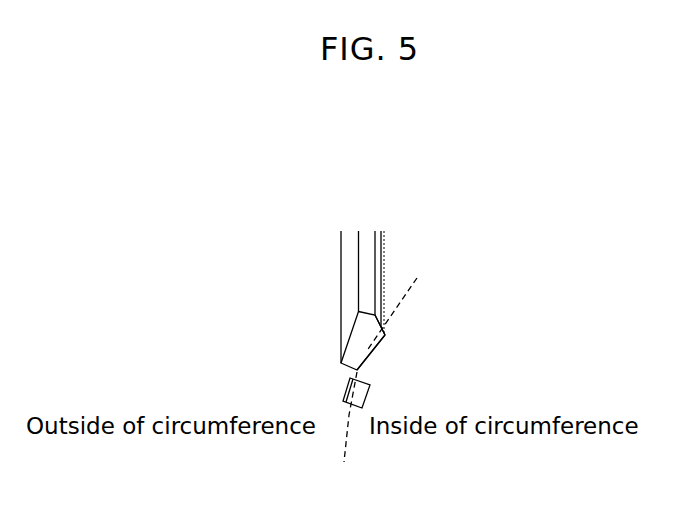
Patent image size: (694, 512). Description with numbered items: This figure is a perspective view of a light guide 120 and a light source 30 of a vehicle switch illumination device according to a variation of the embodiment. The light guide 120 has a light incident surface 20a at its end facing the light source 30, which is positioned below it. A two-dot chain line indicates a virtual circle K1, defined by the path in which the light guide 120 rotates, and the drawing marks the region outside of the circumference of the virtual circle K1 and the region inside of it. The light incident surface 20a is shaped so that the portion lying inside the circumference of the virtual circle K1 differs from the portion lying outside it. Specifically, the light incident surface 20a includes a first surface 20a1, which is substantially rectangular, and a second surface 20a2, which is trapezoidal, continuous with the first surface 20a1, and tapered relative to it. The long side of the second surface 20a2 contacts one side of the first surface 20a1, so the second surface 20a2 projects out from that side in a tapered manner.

The light guide 120 is at (385, 262).
The light incident surface 20a is at (465, 328).
The first surface 20a1 is at (354, 344).
The second surface 20a2 is at (384, 334).
The light source 30 is at (346, 390).
The virtual circle K1 is at (344, 460).